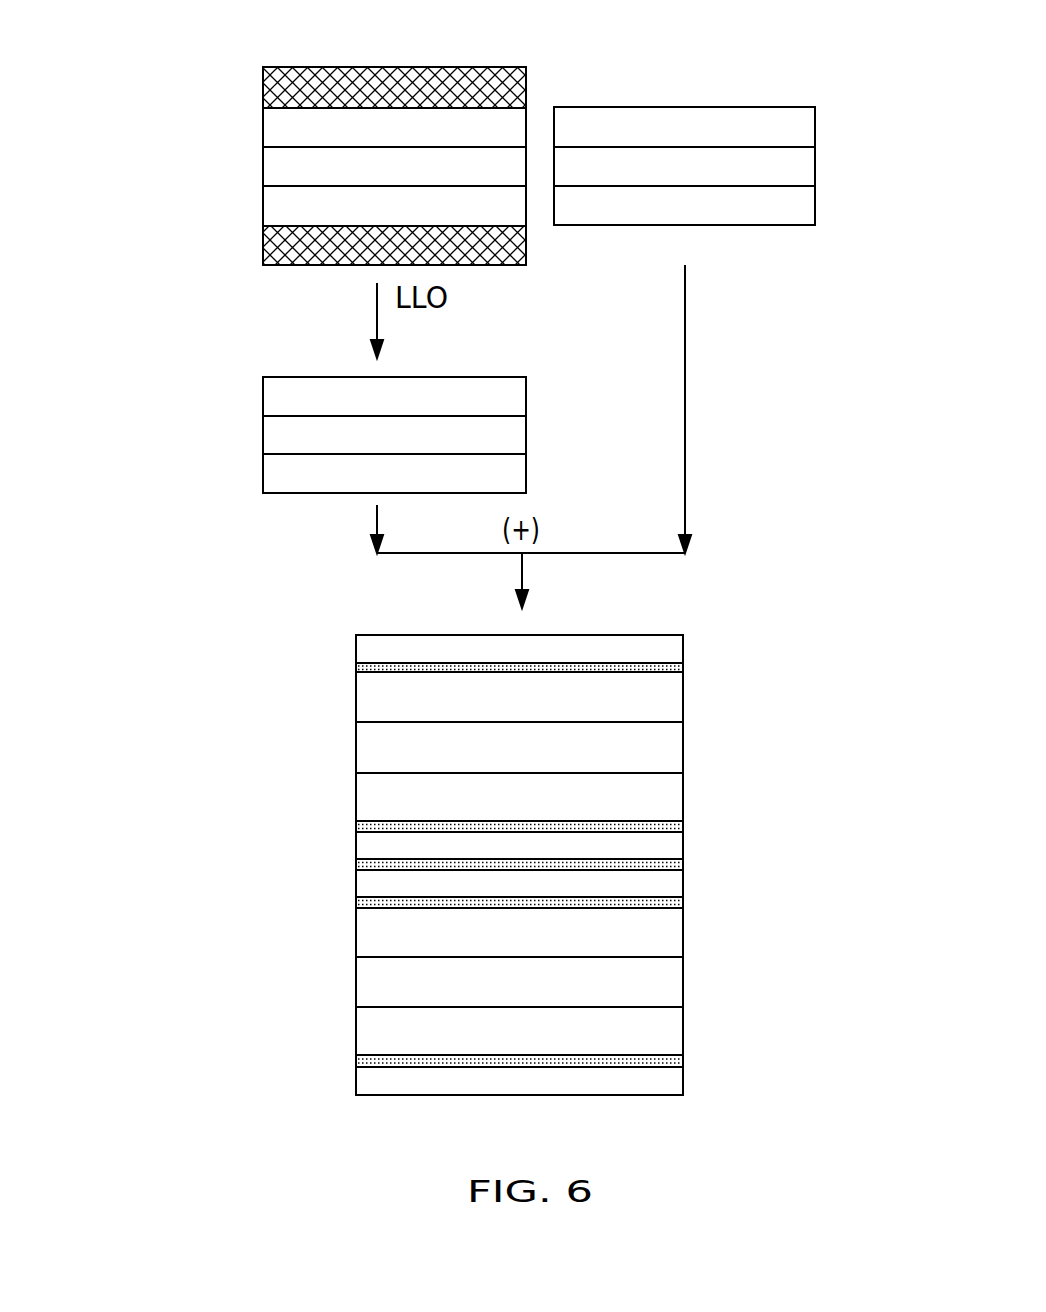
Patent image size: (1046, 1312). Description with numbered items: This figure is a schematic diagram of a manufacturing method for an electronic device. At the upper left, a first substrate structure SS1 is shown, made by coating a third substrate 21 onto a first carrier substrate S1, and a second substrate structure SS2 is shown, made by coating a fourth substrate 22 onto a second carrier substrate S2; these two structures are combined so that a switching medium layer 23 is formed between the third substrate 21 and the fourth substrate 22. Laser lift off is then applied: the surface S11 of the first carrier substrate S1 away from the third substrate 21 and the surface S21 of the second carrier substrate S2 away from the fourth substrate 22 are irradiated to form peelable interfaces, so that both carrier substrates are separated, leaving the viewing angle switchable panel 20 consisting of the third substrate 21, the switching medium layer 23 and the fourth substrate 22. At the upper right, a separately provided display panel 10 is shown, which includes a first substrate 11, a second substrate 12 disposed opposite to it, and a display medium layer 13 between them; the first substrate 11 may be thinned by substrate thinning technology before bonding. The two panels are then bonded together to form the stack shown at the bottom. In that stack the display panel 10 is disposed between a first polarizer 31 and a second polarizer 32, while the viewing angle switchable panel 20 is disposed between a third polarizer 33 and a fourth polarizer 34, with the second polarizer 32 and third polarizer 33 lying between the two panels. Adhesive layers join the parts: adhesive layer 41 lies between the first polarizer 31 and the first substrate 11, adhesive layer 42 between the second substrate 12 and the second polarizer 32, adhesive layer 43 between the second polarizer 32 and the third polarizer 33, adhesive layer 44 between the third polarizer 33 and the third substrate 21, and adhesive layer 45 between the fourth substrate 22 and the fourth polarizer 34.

The display panel 10 is at (884, 97).
The first substrate 11 is at (817, 206).
The second substrate 12 is at (817, 121).
The display medium layer 13 is at (817, 164).
The viewing angle switchable panel 20 is at (133, 376).
The third substrate 21 is at (263, 206).
The fourth substrate 22 is at (263, 127).
The switching medium layer 23 is at (263, 165).
The first polarizer 31 is at (685, 1081).
The second polarizer 32 is at (685, 884).
The third polarizer 33 is at (685, 848).
The fourth polarizer 34 is at (685, 648).
The adhesive layer 41 is at (356, 1060).
The adhesive layer 42 is at (356, 902).
The adhesive layer 43 is at (356, 864).
The adhesive layer 44 is at (356, 826).
The adhesive layer 45 is at (356, 667).
The first carrier substrate S1 is at (263, 247).
The second carrier substrate S2 is at (263, 87).
The surface of the first carrier substrate S11 is at (308, 265).
The surface of the second carrier substrate S21 is at (311, 67).
The first substrate structure SS1 is at (133, 173).
The second substrate structure SS2 is at (133, 57).